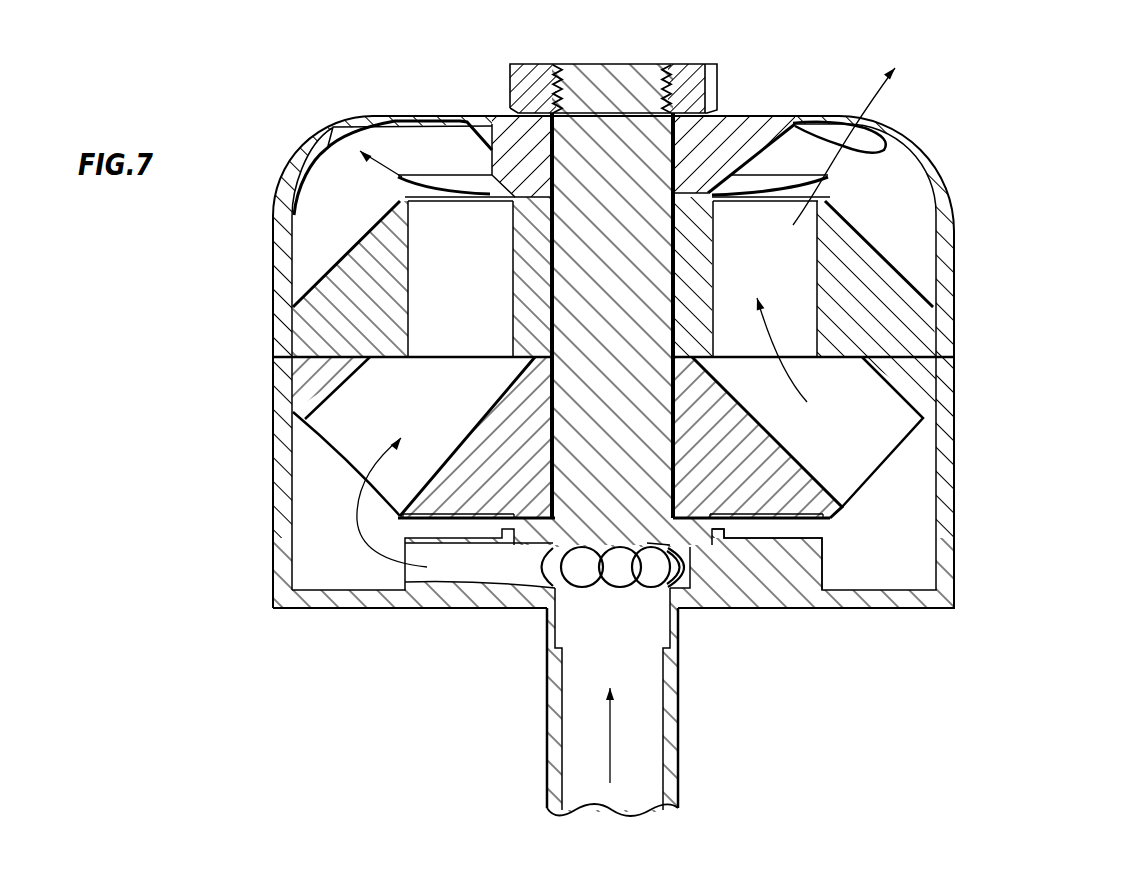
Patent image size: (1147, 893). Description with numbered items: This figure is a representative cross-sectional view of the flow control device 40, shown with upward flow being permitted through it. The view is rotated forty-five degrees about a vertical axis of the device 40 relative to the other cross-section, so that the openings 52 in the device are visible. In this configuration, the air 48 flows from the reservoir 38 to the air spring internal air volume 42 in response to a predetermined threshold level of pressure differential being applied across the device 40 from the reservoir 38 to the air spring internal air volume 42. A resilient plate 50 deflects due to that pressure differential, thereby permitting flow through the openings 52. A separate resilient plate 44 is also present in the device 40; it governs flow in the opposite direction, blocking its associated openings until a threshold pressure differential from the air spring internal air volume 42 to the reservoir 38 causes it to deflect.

The reservoir 38 is at (624, 851).
The device 40 is at (1060, 98).
The air spring internal air volume 42 is at (626, 41).
The resilient plate 44 is at (807, 525).
The air 48 is at (877, 128).
The resilient plate 50 is at (443, 253).
The openings 52 is at (474, 327).